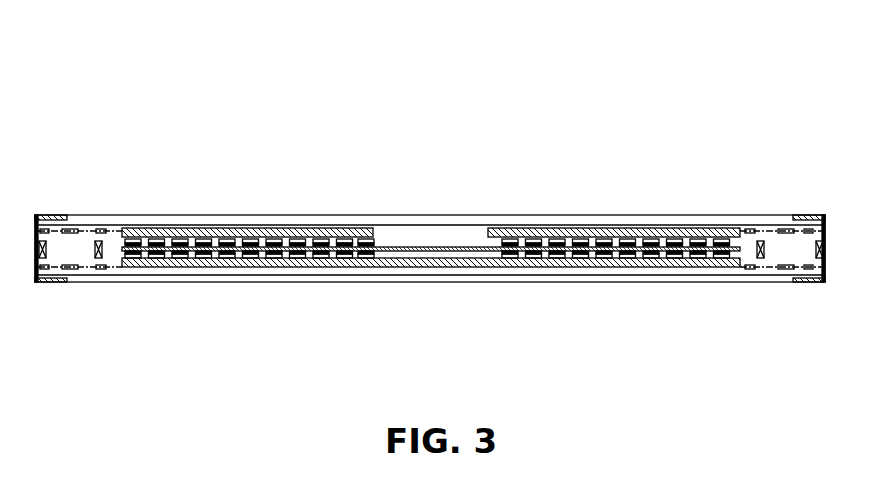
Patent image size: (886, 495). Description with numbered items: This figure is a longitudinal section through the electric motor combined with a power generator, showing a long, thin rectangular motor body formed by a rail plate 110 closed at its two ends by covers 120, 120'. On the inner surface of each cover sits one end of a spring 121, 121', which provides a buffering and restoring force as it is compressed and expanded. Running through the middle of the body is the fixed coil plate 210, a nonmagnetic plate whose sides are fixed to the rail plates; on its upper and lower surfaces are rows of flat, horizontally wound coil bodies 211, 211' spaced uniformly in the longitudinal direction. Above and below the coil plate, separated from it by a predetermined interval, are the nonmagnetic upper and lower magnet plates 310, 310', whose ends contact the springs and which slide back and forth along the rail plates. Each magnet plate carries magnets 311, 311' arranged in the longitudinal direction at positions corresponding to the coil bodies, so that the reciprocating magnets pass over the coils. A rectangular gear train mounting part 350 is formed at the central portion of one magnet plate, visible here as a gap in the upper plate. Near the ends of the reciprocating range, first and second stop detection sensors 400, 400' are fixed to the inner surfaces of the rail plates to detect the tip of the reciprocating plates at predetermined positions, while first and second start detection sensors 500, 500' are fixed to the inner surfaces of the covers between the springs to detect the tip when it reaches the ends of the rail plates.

The rail plate 110 is at (350, 215).
The cover 120 is at (822, 200).
The cover 120' is at (60, 198).
The spring 121 is at (627, 193).
The spring 121' is at (232, 189).
The coil plate 210 is at (427, 250).
The coil body 211 is at (427, 195).
The coil body 211' is at (428, 301).
The upper magnet plate 310 is at (614, 185).
The lower magnet plate 310' is at (431, 307).
The magnet 311 is at (427, 194).
The magnet 311' is at (427, 304).
The gear train mounting part 350 is at (488, 234).
The first stop detection sensor 400 is at (772, 306).
The second stop detection sensor 400' is at (96, 309).
The first start detection sensor 500 is at (826, 308).
The second start detection sensor 500' is at (32, 311).